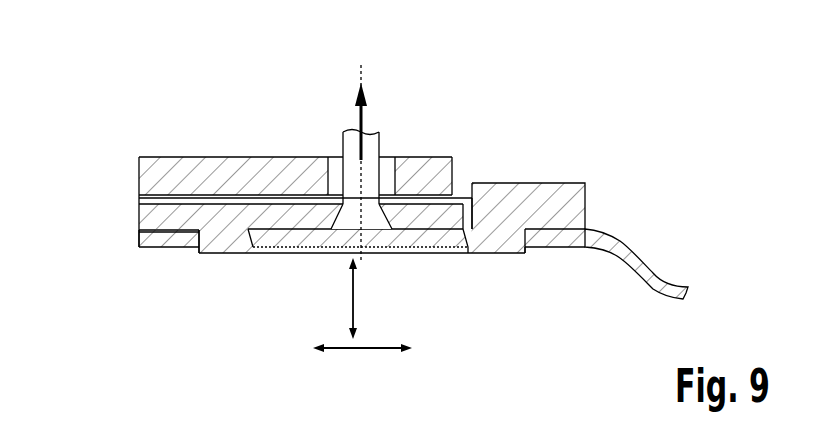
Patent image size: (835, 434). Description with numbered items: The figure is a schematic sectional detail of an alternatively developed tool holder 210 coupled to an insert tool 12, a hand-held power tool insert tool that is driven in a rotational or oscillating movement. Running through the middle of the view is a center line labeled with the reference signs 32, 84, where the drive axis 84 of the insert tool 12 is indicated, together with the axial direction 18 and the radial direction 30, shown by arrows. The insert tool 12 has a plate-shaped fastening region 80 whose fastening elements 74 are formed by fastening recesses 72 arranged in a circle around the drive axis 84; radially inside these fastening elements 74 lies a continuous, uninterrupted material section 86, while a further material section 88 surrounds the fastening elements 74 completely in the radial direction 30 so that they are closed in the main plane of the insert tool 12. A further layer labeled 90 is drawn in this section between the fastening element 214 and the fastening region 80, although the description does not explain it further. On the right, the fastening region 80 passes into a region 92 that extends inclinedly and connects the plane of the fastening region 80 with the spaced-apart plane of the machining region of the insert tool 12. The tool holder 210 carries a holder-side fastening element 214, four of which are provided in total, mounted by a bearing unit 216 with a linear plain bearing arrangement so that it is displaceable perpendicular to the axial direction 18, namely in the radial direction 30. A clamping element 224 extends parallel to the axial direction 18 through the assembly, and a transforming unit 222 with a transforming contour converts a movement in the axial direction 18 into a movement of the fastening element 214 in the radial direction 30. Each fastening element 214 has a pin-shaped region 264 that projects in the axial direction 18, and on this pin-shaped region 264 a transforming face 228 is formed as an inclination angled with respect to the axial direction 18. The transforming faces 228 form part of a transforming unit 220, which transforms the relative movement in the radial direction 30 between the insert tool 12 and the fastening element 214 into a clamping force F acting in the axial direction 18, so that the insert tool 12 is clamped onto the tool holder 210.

The insert tool 12 is at (656, 245).
The axial direction 18 is at (356, 296).
The radial direction 30 is at (360, 351).
The actuating axis 32 is at (424, 157).
The drive axis 84 is at (361, 67).
The fastening recesses 72 is at (149, 289).
The fastening elements 74 is at (190, 249).
The fastening region 80 is at (166, 235).
The material section 86 is at (303, 238).
The further material section 88 is at (158, 249).
The piezo layer 90 is at (305, 160).
The inclined region 92 is at (652, 273).
The tool holder 210 is at (321, 289).
The fastening element 214 is at (220, 222).
The bearing unit 216 is at (121, 191).
The transforming unit 220 is at (243, 269).
The transforming unit 222 is at (401, 209).
The clamping element 224 is at (415, 157).
The transforming face 228 is at (254, 247).
The pin-shaped region 264 is at (225, 253).
The clamping force F is at (364, 120).